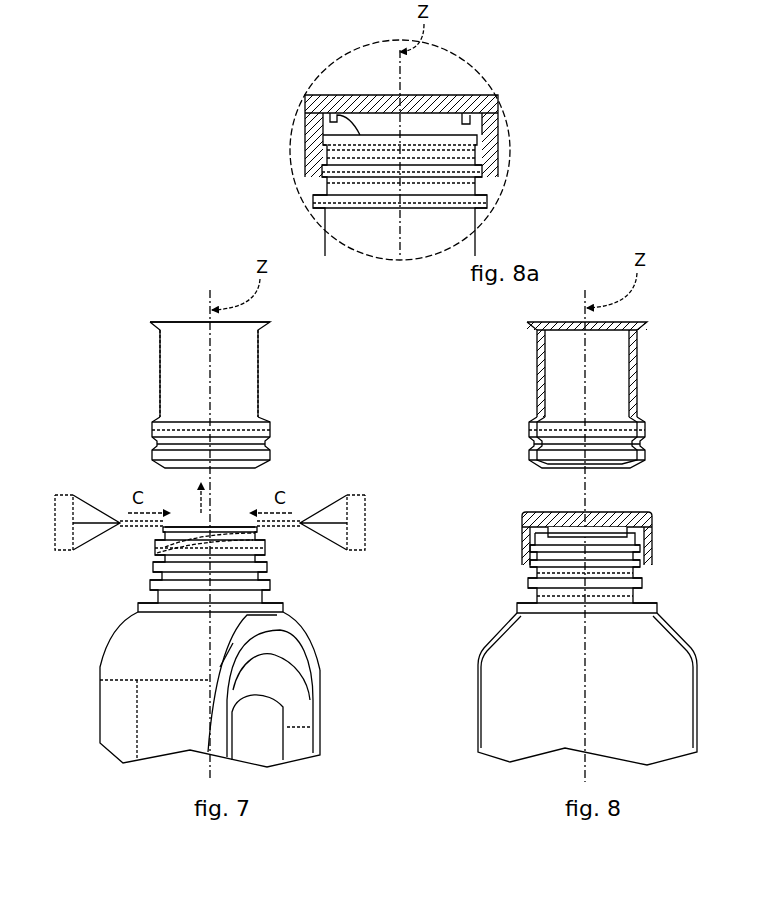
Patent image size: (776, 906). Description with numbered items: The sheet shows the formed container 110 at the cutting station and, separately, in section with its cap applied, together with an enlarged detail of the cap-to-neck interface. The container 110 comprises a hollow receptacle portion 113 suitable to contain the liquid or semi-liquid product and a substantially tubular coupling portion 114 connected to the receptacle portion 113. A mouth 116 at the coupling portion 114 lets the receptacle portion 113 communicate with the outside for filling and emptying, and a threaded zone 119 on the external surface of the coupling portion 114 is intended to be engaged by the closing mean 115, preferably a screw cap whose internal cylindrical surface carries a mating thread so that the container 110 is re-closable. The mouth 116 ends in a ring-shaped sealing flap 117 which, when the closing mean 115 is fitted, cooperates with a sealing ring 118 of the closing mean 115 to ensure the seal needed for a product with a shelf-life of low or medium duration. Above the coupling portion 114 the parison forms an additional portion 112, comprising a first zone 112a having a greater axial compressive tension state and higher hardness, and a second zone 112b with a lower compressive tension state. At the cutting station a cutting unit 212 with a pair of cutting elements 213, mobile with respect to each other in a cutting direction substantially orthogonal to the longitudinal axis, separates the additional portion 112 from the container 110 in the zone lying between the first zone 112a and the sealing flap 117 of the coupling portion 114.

In FIG. 7, the container 110 is at (322, 695).
In FIG. 8, the container 110 is at (586, 669).
In FIG. 7, the additional portion 112 is at (189, 395).
In FIG. 8, the additional portion 112 is at (624, 395).
In FIG. 7, the first zone 112a is at (159, 446).
In FIG. 8, the first zone 112a is at (641, 447).
In FIG. 7, the second zone 112b is at (163, 382).
In FIG. 8, the second zone 112b is at (632, 348).
In FIG. 8, the receptacle portion 113 is at (478, 697).
In FIG. 8a, the coupling portion 114 is at (490, 186).
In FIG. 8, the coupling portion 114 is at (527, 574).
In FIG. 8a, the closing mean 115 is at (474, 96).
In FIG. 8, the closing mean 115 is at (642, 511).
In FIG. 8a, the mouth 116 is at (334, 119).
In FIG. 7, the mouth 116 is at (192, 528).
In FIG. 8a, the sealing flap 117 is at (470, 124).
In FIG. 8a, the sealing ring 118 is at (361, 112).
In FIG. 8a, the threaded zone 119 is at (482, 168).
In FIG. 7, the threaded zone 119 is at (197, 565).
In FIG. 7, the cutting unit 212 is at (223, 513).
In FIG. 7, the cutting elements 213 is at (124, 526).